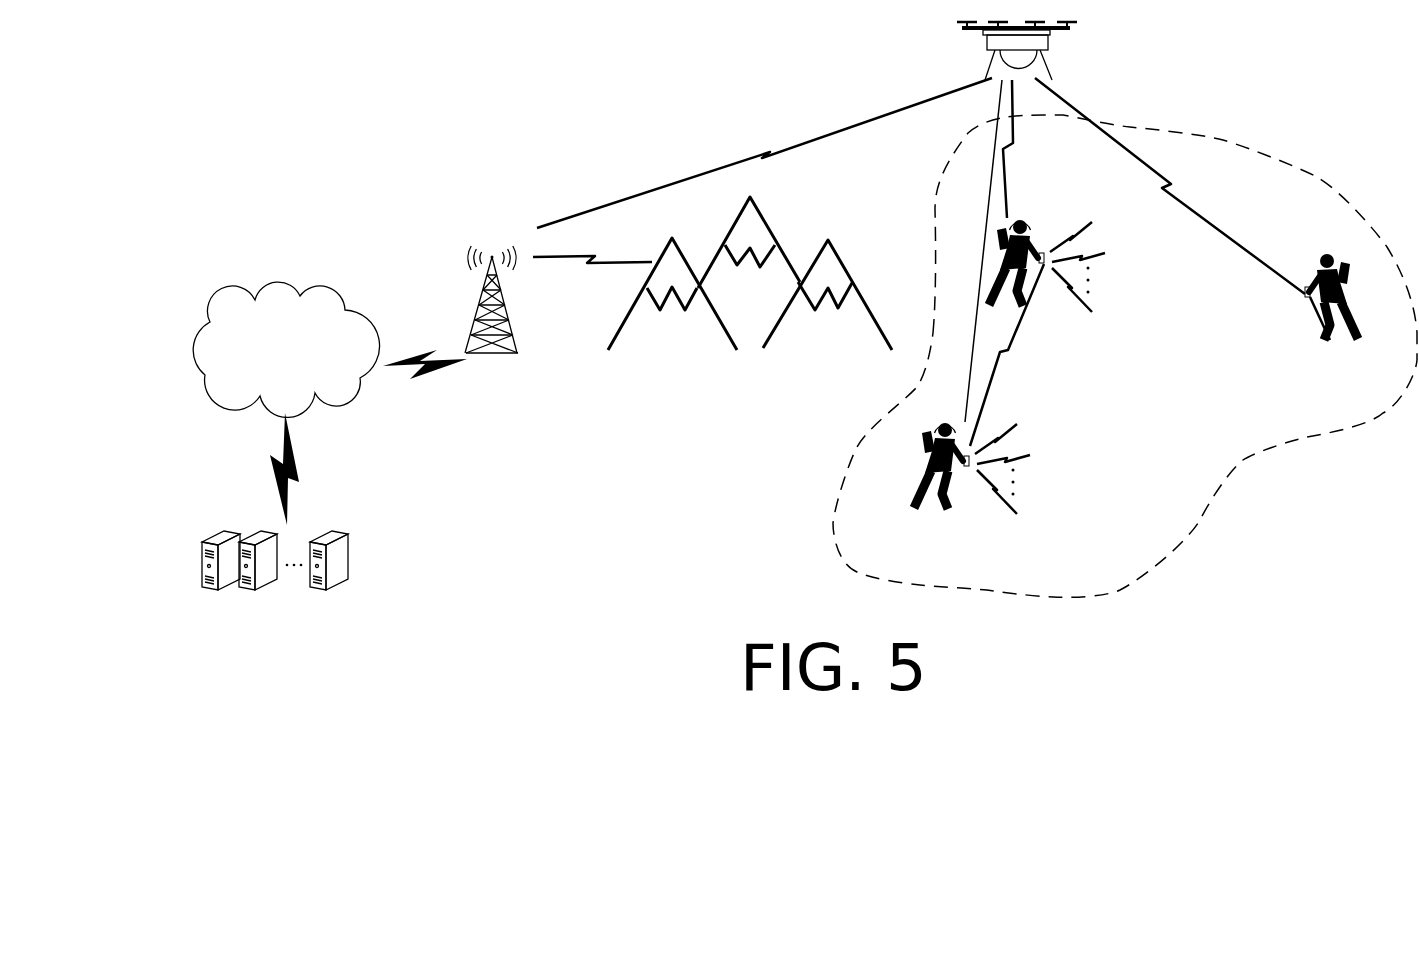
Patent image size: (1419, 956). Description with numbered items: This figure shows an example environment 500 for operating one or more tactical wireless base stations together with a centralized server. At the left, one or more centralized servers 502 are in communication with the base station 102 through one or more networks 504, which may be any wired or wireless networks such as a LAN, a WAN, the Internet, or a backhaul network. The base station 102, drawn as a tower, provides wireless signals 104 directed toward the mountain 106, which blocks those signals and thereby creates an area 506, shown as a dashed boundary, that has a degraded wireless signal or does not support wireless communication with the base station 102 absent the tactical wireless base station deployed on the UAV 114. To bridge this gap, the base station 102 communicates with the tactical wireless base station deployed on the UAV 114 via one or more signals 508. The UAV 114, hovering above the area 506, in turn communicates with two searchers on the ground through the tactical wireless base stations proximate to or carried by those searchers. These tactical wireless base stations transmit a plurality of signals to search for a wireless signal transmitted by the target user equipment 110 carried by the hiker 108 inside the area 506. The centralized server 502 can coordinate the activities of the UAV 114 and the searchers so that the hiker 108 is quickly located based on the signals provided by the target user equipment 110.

The environment 500 is at (252, 80).
The base station 102 is at (489, 375).
The wireless signals 104 is at (621, 276).
The mountain 106 is at (898, 362).
The hiker 108 is at (1196, 225).
The target user equipment 110 is at (1305, 271).
The UAV 114 is at (940, 10).
The centralized server 502 is at (238, 578).
The network 504 is at (286, 349).
The area 506 is at (932, 189).
The signals 508 is at (639, 182).